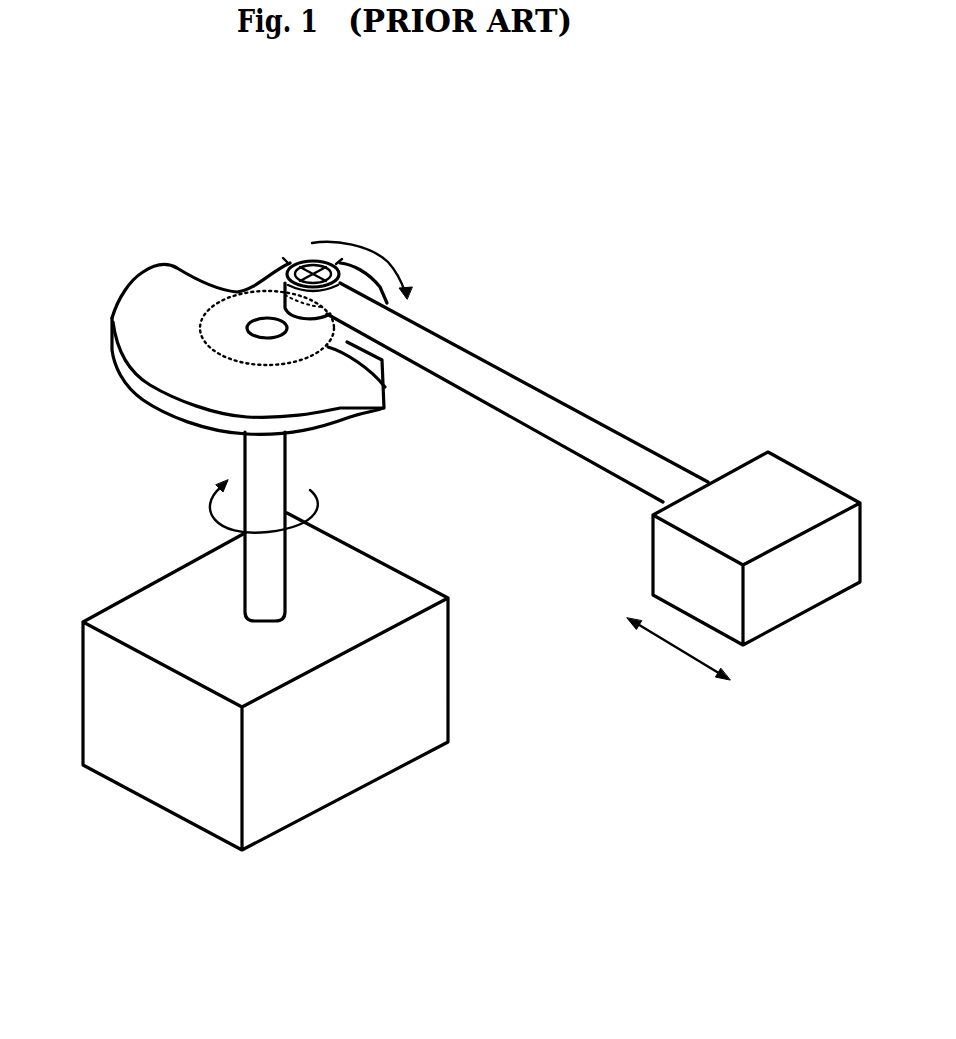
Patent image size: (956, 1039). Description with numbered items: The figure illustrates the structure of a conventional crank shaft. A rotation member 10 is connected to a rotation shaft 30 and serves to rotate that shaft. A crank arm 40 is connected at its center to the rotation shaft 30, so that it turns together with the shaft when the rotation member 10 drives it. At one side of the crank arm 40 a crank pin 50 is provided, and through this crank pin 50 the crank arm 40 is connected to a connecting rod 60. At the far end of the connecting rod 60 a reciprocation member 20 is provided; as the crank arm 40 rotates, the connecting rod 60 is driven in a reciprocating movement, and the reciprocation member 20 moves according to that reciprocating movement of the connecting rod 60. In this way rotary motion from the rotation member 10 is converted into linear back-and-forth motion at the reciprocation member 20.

The rotation member 10 is at (367, 752).
The reciprocation member 20 is at (793, 488).
The rotation shaft 30 is at (256, 580).
The crank arm 40 is at (143, 340).
The crank pin 50 is at (312, 267).
The connecting rod 60 is at (567, 420).